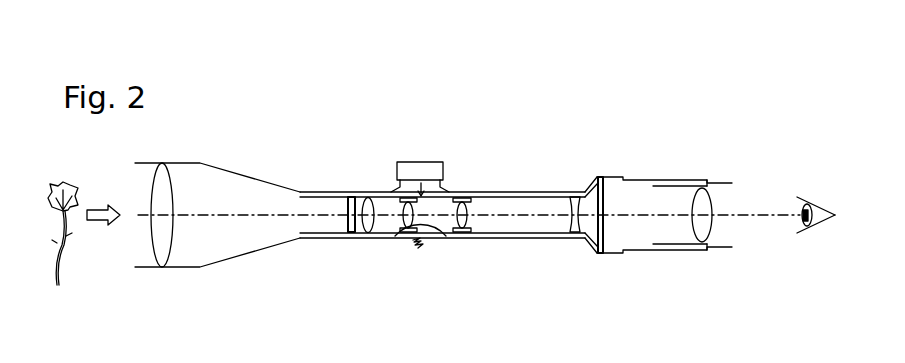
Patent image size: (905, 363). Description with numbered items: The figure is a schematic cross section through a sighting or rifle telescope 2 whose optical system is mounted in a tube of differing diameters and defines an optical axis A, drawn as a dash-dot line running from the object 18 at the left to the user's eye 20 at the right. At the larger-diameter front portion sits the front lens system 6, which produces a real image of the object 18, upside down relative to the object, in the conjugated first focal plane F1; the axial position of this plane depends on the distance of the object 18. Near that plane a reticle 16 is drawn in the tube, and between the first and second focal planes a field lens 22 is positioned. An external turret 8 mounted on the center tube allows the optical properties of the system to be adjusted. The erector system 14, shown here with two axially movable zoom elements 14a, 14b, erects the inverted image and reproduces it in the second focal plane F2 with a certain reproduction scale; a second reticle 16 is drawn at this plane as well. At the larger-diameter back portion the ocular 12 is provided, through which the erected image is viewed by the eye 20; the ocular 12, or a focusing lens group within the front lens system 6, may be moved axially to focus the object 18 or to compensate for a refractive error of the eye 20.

The sighting telescope 2 is at (537, 87).
The front lens system 6 is at (172, 263).
The external turret 8 is at (423, 161).
The ocular 12 is at (700, 241).
The erector system 14 is at (447, 254).
The zoom element 14a is at (393, 233).
The zoom element 14b is at (485, 253).
The reticle 16 is at (352, 238).
The object 18 is at (59, 255).
The user's eye 20 is at (818, 227).
The field lens 22 is at (371, 233).
The optical axis A is at (760, 216).
The first focal plane F1 is at (353, 192).
The second focal plane F2 is at (603, 172).